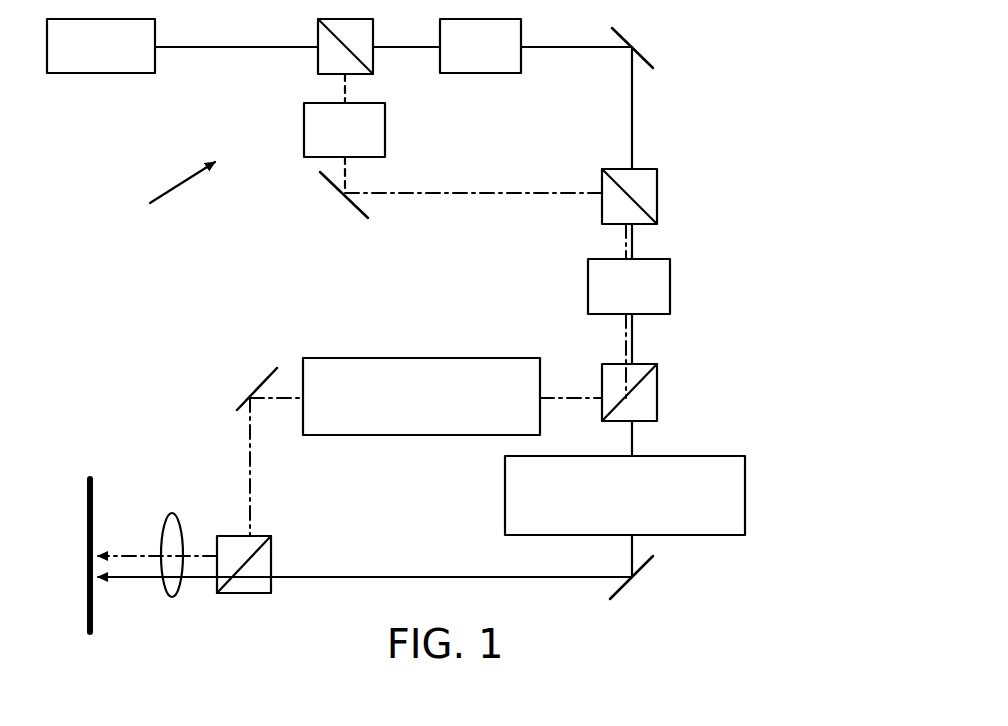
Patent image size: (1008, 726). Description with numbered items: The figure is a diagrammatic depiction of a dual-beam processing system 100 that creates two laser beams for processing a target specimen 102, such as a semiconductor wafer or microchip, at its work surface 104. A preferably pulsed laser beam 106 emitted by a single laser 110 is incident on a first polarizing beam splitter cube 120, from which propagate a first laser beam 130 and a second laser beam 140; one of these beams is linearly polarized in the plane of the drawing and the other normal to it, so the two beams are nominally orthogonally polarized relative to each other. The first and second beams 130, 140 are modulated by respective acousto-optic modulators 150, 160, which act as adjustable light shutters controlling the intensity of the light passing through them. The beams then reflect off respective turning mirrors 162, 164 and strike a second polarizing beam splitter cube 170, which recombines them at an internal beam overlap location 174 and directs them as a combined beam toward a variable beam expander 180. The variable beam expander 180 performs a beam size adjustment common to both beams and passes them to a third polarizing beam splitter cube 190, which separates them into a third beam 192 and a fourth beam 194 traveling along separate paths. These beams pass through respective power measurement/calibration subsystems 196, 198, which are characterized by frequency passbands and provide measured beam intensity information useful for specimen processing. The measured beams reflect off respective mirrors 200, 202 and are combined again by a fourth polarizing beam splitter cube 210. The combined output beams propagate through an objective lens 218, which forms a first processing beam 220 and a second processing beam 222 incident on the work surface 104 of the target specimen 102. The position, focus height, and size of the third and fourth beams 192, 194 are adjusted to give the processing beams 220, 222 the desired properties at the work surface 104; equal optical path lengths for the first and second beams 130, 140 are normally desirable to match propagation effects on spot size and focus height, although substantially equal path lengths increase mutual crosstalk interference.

The dual-beam processing system 100 is at (158, 198).
The target specimen 102 is at (91, 638).
The work surface 104 is at (92, 495).
The laser beam 106 is at (213, 48).
The laser 110 is at (85, 74).
The first polarizing beam splitter cube 120 is at (373, 62).
The first laser beam 130 is at (573, 48).
The second laser beam 140 is at (468, 193).
The acousto-optic modulator 150 is at (490, 74).
The acousto-optic modulator 160 is at (385, 136).
The turning mirror 162 is at (642, 52).
The turning mirror 164 is at (325, 190).
The second polarizing beam splitter cube 170 is at (657, 203).
The internal beam overlap location 174 is at (623, 196).
The variable beam expander 180 is at (670, 291).
The third polarizing beam splitter cube 190 is at (657, 391).
The third beam 192 is at (636, 432).
The fourth beam 194 is at (580, 388).
The power measurement/calibration subsystem 196 is at (745, 501).
The power measurement/calibration subsystem 198 is at (444, 357).
The mirror 200 is at (645, 565).
The mirror 202 is at (265, 385).
The fourth polarizing beam splitter cube 210 is at (271, 561).
The objective lens 218 is at (182, 526).
The first processing beam 220 is at (125, 580).
The second processing beam 222 is at (125, 552).